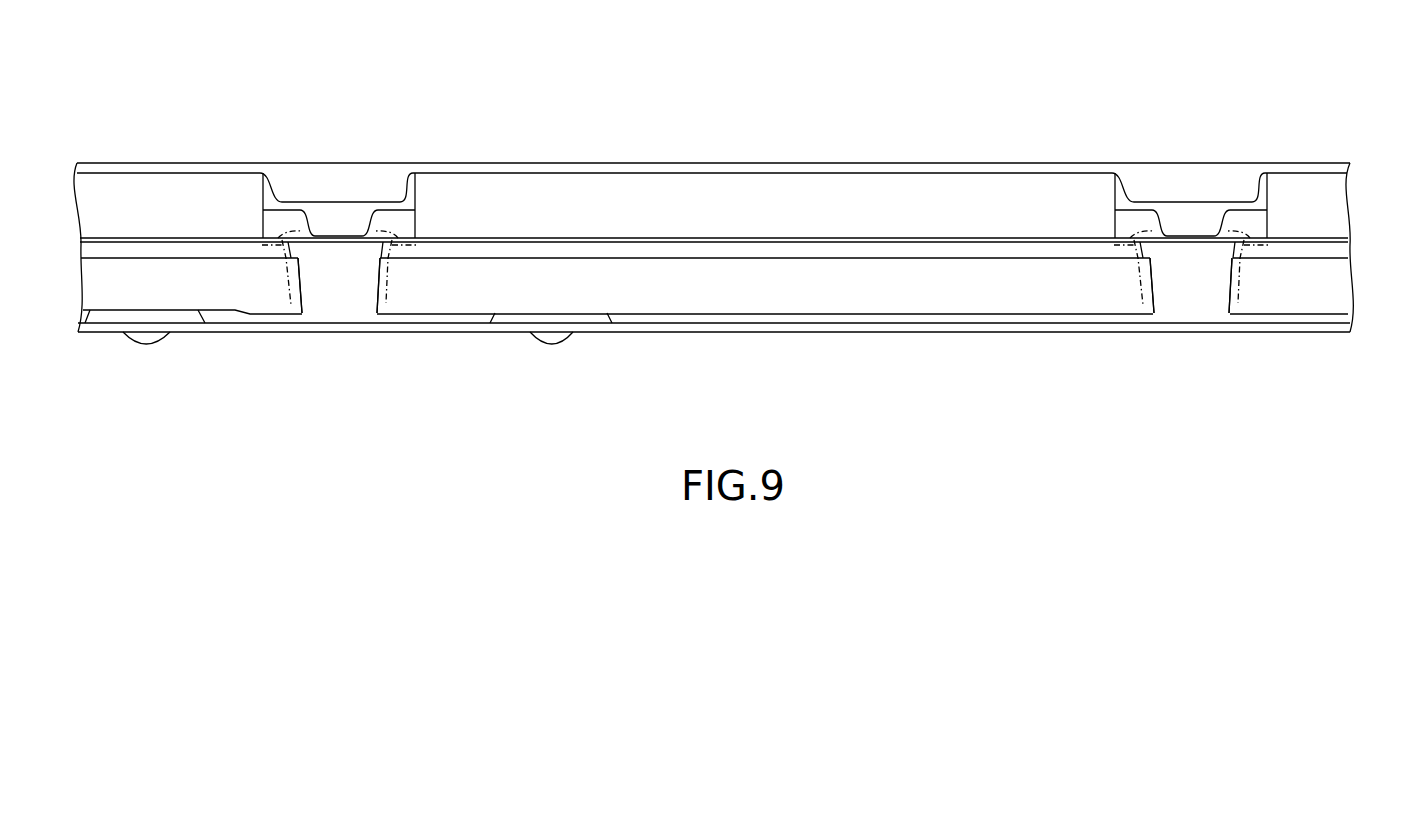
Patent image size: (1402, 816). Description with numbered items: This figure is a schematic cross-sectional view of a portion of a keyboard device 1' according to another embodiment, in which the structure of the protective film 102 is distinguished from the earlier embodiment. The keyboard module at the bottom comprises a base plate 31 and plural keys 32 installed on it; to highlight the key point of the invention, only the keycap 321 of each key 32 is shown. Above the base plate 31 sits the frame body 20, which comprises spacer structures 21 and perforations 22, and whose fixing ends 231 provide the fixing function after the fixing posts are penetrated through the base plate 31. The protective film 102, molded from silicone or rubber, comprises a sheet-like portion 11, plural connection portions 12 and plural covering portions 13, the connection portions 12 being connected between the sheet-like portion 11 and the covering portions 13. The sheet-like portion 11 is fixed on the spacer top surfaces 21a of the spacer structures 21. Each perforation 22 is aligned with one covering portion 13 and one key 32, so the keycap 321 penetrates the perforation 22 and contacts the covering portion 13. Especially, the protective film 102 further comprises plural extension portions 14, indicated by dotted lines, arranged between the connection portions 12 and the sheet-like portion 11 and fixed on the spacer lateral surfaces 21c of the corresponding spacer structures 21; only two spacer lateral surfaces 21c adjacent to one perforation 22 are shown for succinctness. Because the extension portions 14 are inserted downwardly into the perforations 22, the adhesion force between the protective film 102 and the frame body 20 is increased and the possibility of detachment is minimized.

The keyboard device 1' is at (435, 61).
The sheet-like portion 11 is at (341, 235).
The protective film 102 is at (731, 178).
The connection portion 12 is at (410, 185).
The covering portion 13 is at (641, 163).
The extension portion 14 is at (292, 274).
The spacer top surface 21a is at (347, 248).
The spacer structure 21 is at (755, 331).
The frame body 20 is at (755, 331).
The spacer lateral surface 21c is at (297, 296).
The perforation 22 is at (1100, 287).
The fixing end 231 is at (143, 340).
The base plate 31 is at (848, 334).
The key 32 is at (892, 192).
The keycap 321 is at (713, 226).